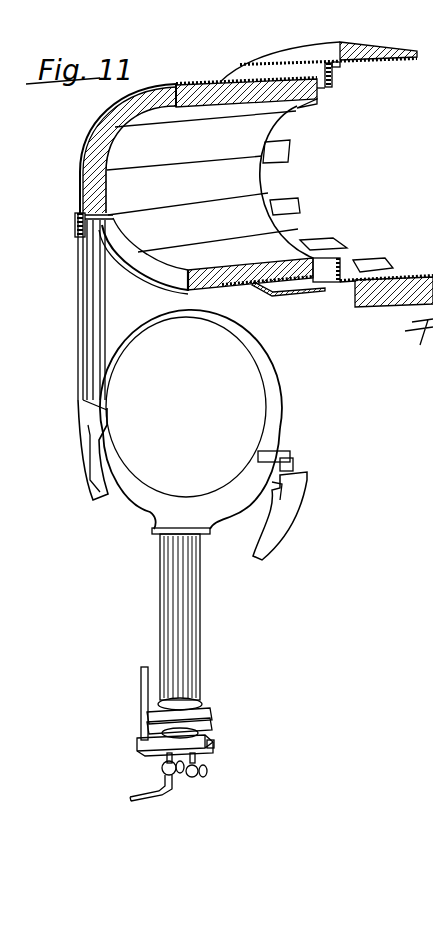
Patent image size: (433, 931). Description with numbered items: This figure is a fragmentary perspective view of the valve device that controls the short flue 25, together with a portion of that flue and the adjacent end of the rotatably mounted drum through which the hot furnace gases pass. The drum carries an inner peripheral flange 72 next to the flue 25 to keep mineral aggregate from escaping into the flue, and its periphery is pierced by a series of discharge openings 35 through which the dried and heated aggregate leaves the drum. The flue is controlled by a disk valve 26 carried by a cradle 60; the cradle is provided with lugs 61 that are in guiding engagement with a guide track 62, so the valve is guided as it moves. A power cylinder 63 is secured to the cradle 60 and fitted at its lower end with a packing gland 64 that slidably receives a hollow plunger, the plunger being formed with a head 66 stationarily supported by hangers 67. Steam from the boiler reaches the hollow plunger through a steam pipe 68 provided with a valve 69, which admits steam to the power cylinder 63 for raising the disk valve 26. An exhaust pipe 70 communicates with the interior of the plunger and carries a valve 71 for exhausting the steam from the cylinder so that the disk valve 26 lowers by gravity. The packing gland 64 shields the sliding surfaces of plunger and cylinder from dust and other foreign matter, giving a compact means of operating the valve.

The flue 25 is at (98, 153).
The discharge openings 35 is at (325, 241).
The inner peripheral flange 72 is at (342, 264).
The disk valve 26 is at (272, 378).
The lugs 61 is at (288, 454).
The guide track 62 is at (92, 340).
The cradle 60 is at (143, 500).
The power cylinder 63 is at (198, 604).
The hangers 67 is at (140, 673).
The packing gland 64 is at (202, 708).
The head 66 is at (205, 733).
The valve 69 is at (164, 763).
The exhaust pipe 70 is at (197, 760).
The valve 71 is at (209, 770).
The steam pipe 68 is at (135, 790).